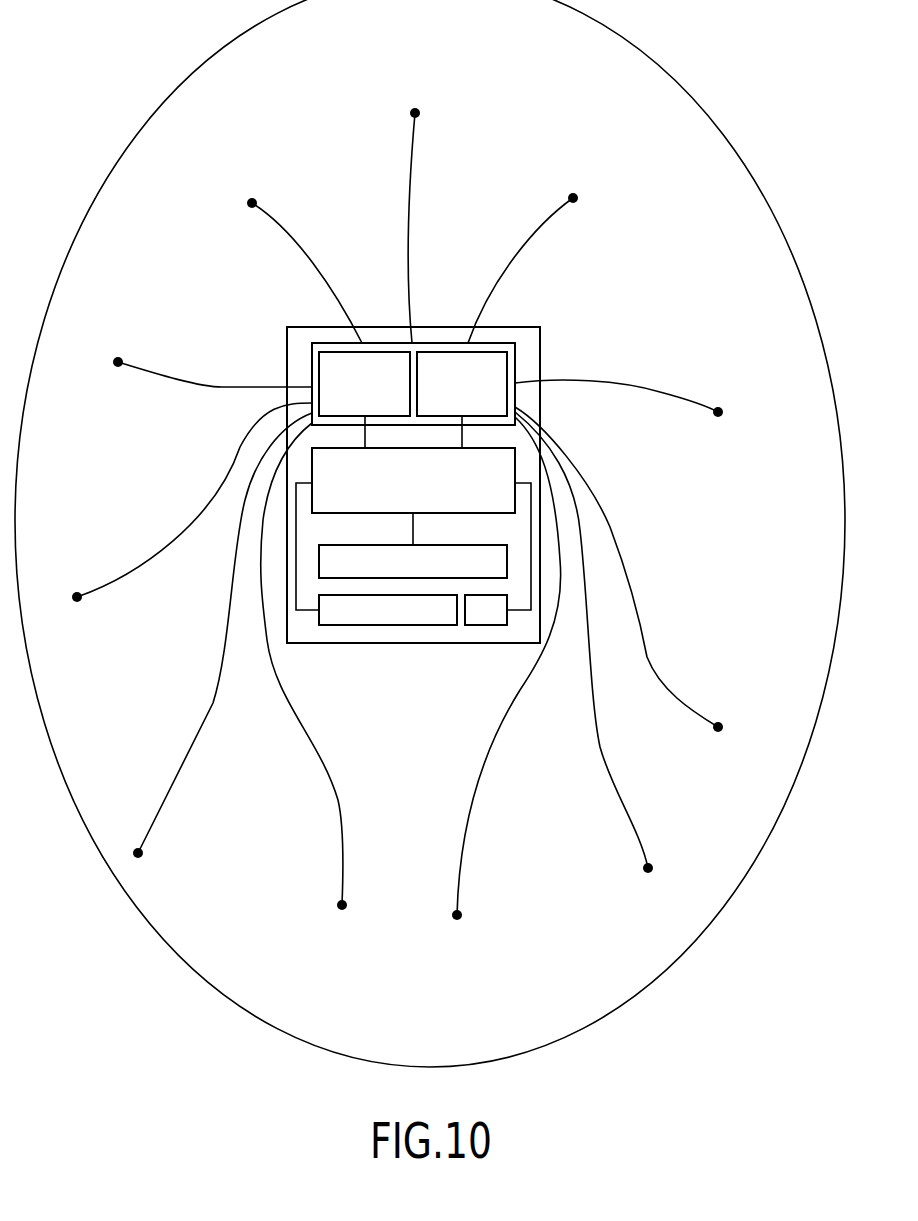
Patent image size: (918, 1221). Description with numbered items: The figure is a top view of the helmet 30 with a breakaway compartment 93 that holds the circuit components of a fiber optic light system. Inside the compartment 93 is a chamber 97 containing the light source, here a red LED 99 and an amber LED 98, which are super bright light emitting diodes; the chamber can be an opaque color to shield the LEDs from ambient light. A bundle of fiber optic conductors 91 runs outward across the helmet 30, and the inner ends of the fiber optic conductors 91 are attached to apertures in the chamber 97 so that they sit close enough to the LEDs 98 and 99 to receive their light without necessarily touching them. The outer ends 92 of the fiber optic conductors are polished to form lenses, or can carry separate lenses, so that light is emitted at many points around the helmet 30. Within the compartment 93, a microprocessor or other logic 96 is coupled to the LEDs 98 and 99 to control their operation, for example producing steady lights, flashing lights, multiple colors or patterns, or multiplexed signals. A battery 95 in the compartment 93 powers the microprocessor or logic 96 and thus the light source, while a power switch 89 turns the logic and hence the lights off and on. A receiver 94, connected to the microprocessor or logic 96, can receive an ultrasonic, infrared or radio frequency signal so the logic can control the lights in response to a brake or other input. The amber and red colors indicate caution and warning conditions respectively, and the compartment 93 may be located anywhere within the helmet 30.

The helmet 30 is at (674, 1041).
The power switch 89 is at (480, 627).
The fiber optic conductors 91 is at (408, 217).
The ends of the fiber optic conductors 92 is at (417, 113).
The breakaway compartment 93 is at (423, 645).
The receiver 94 is at (410, 626).
The battery 95 is at (507, 567).
The microprocessor or other logic 96 is at (515, 512).
The chamber 97 is at (516, 364).
The amber LED 98 is at (440, 352).
The red LED 99 is at (388, 352).